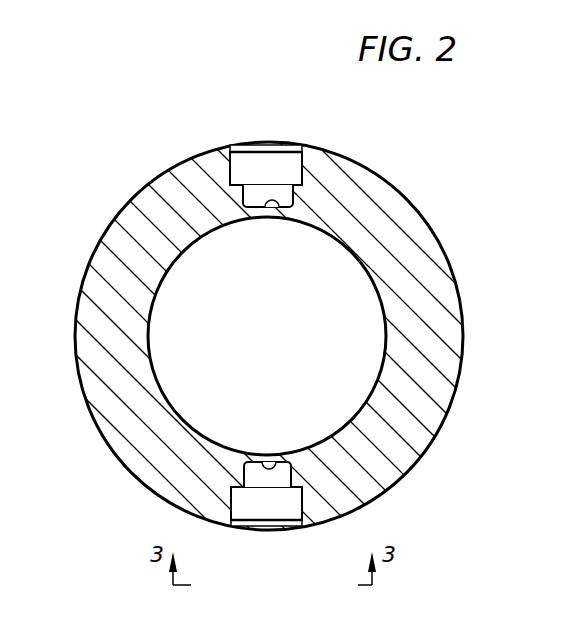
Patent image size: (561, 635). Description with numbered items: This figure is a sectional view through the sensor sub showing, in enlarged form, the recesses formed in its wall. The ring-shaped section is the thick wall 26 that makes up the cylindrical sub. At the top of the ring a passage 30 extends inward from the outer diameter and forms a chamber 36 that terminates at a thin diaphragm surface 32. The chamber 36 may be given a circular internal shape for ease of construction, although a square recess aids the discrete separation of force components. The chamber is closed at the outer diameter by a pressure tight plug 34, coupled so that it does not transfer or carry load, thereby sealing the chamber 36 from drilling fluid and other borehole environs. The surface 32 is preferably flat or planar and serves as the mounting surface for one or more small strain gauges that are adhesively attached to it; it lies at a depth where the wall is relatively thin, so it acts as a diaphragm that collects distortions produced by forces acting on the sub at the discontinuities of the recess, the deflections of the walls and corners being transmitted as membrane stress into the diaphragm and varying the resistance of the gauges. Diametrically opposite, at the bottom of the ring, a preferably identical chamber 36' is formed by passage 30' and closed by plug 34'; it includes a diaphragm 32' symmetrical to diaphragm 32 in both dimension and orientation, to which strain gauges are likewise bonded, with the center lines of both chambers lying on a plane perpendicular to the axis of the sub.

The thick wall 26 is at (148, 463).
The passage 30 is at (316, 151).
The diaphragm surface 32 is at (266, 236).
The pressure tight plug 34 is at (266, 110).
The chamber 36 is at (213, 158).
The passage 30' is at (337, 505).
The diaphragm 32' is at (273, 432).
The pressure tight plug 34' is at (266, 559).
The chamber 36' is at (190, 500).